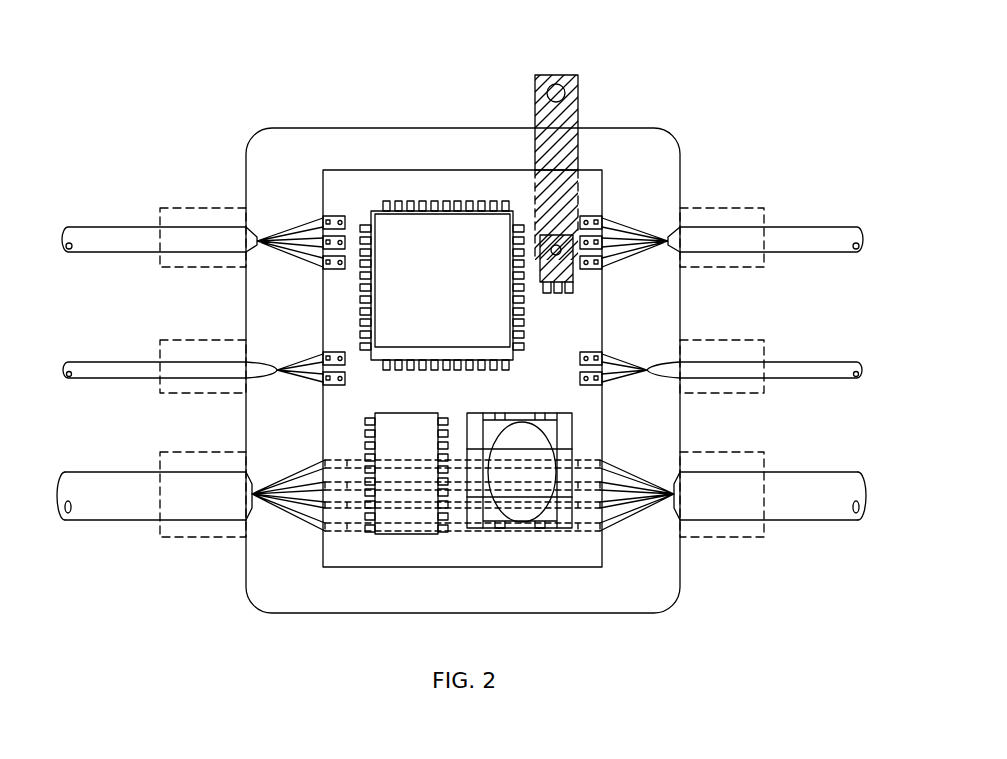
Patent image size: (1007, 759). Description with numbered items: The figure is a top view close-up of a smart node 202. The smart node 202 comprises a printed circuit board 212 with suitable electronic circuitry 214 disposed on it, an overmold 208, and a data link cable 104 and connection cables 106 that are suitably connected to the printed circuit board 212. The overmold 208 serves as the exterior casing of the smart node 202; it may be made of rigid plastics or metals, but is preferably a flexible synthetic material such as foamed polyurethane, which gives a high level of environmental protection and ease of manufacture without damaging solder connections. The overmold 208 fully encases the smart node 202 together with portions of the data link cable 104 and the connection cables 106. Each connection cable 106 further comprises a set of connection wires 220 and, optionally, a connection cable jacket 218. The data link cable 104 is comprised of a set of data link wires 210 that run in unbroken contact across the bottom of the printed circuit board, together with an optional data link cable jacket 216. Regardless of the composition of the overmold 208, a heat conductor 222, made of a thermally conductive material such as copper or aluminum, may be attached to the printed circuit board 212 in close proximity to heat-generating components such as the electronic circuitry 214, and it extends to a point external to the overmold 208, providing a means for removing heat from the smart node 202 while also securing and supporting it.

The smart node 202 is at (686, 128).
The overmold 208 is at (418, 128).
The printed circuit board 212 is at (500, 170).
The electronic circuitry 214 is at (372, 211).
The heat conductor 222 is at (587, 66).
The connection wires 220 is at (295, 262).
The connection cables 106 is at (102, 228).
The connection cable jackets 218 is at (110, 240).
The data link cable jacket 216 is at (100, 492).
The data link cable 104 is at (100, 520).
The data link wires 210 is at (307, 510).